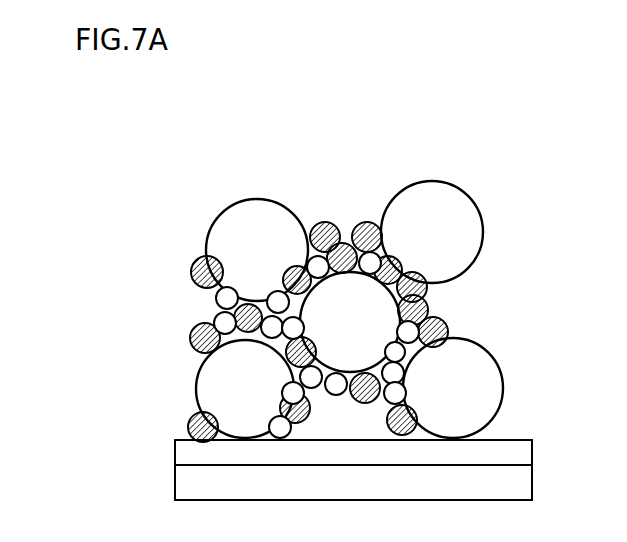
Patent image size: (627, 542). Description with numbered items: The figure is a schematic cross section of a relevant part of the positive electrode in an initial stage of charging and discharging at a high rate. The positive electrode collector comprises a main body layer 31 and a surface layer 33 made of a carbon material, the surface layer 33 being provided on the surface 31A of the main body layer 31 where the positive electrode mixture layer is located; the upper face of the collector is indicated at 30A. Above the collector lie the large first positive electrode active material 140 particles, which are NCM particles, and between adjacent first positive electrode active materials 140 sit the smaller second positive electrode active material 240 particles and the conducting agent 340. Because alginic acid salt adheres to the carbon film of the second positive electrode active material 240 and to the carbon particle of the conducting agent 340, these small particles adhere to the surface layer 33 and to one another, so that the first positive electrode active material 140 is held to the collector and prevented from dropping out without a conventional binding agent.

The first positive electrode active material 140 is at (252, 217).
The second positive electrode active material 240 is at (365, 222).
The conducting agent 340 is at (220, 300).
The upper surface of layer 33 30A is at (512, 438).
The surface of main body layer 31A is at (188, 462).
The surface layer 33 is at (518, 452).
The main body layer 31 is at (518, 485).